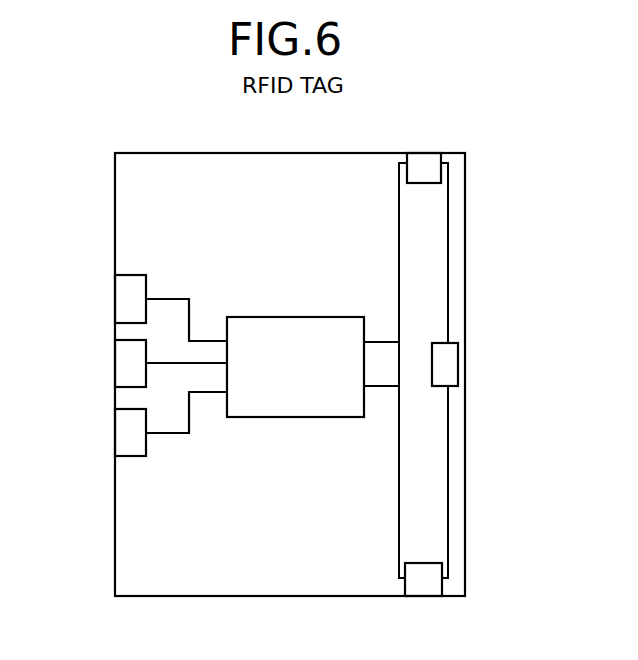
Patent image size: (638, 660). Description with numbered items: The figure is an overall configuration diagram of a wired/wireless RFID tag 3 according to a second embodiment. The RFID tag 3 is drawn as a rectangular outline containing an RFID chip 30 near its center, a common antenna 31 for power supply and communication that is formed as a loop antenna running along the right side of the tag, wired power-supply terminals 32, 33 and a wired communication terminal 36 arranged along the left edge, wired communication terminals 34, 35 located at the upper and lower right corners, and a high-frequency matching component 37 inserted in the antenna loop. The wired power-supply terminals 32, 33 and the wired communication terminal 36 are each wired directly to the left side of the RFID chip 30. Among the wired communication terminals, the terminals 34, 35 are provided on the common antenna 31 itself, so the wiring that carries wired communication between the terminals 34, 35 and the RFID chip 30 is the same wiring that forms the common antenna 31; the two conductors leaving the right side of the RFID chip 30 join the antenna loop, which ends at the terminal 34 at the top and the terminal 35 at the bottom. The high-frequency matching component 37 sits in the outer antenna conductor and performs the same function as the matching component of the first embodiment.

The RFID tag 3 is at (293, 153).
The RFID chip 30 is at (262, 418).
The common antenna 31 is at (438, 254).
The wired power-supply terminal 32 is at (118, 301).
The wired power-supply terminal 33 is at (118, 368).
The wired communication terminal 34 is at (452, 165).
The wired communication terminal 35 is at (432, 585).
The wired communication terminal 36 is at (118, 441).
The high-frequency matching component 37 is at (453, 362).